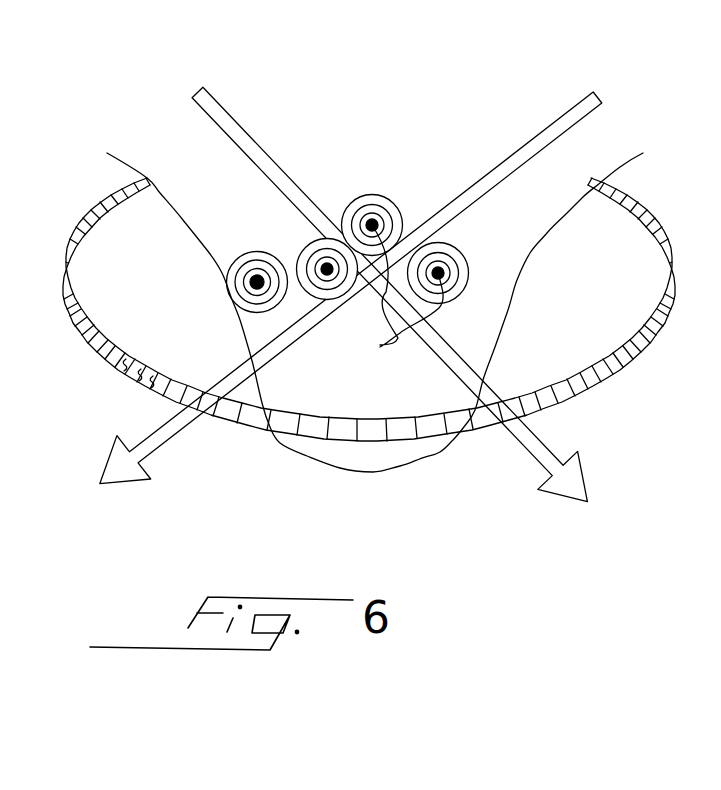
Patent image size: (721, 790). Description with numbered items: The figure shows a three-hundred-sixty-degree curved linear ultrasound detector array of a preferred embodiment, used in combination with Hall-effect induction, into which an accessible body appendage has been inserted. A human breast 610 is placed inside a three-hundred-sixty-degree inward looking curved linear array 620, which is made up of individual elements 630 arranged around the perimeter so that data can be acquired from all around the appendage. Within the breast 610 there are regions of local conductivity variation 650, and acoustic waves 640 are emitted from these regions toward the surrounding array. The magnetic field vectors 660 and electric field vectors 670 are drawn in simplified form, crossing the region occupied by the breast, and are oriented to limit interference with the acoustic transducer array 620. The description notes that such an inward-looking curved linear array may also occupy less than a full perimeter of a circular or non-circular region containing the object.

The human breast 610 is at (372, 464).
The 360° inward looking curved linear array 620 is at (590, 387).
The individual elements 630 is at (150, 382).
The acoustic waves 640 is at (457, 249).
The regions of local conductivity variation 650 is at (385, 294).
The magnetic field vectors 660 is at (210, 102).
The electric field vectors 670 is at (598, 101).